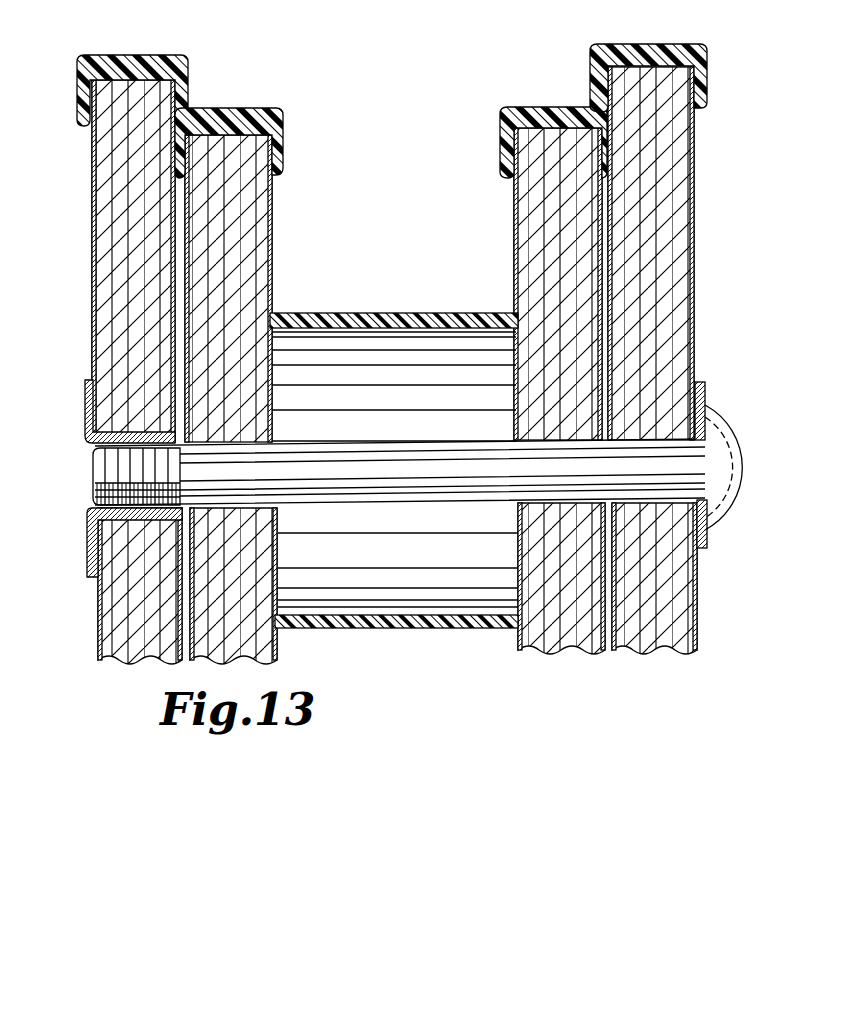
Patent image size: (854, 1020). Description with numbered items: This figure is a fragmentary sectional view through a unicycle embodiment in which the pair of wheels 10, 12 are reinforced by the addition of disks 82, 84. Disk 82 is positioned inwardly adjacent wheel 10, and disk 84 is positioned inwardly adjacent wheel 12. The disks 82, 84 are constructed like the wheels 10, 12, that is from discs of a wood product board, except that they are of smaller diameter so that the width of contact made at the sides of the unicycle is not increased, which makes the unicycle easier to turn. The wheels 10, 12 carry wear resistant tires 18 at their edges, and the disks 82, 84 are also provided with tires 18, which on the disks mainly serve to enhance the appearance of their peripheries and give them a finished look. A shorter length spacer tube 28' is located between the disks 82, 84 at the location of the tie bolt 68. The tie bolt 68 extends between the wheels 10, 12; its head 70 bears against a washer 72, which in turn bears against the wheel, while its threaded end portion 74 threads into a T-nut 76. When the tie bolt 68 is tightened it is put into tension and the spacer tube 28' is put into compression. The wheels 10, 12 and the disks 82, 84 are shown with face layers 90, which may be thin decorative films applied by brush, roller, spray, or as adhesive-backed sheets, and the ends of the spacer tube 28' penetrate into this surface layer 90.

The wheel 10 is at (115, 270).
The wheel 12 is at (670, 300).
The tire 18 is at (140, 53).
The spacer tube 28' is at (394, 505).
The tie bolt 68 is at (370, 497).
The head 70 is at (717, 455).
The washer 72 is at (705, 537).
The threaded end portion 74 is at (102, 473).
The T-nut 76 is at (85, 398).
The disk 82 is at (247, 263).
The disk 84 is at (537, 242).
The face layer 90 is at (90, 200).